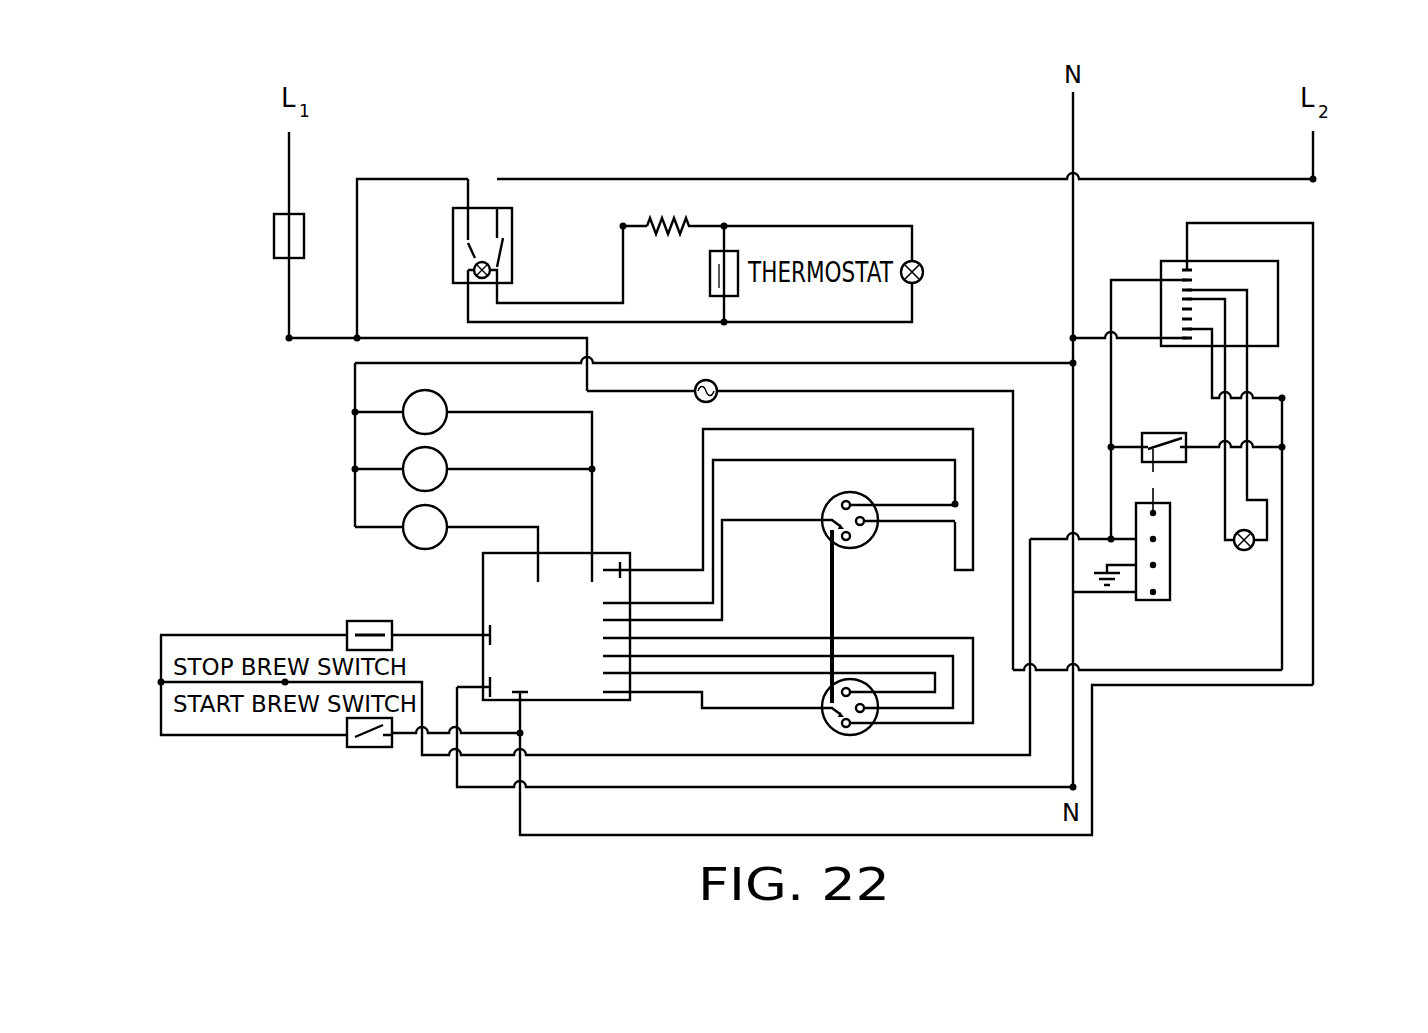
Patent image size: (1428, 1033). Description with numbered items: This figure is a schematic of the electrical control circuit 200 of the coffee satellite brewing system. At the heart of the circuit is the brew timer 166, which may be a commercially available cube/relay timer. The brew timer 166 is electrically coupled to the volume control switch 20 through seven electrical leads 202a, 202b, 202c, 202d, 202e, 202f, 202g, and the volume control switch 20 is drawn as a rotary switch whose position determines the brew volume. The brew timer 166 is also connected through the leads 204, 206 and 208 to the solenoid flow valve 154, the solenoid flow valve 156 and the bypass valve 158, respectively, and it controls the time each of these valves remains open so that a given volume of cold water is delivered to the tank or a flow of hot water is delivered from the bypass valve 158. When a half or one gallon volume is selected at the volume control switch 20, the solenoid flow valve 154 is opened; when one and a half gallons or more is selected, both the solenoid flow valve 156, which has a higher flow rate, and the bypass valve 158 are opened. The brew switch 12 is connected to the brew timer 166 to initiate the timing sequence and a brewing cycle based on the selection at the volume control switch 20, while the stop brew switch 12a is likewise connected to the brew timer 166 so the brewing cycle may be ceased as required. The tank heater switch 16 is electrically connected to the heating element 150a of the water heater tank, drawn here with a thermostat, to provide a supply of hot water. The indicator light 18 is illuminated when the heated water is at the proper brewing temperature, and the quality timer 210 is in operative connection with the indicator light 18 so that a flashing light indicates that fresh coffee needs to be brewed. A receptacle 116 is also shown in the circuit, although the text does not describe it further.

The brew switch 12 is at (360, 748).
The stop brew switch 12a is at (362, 620).
The tank heater switch 16 is at (483, 218).
The indicator light 18 is at (1253, 550).
The volume control switch 20 is at (842, 571).
The receptacle 116 is at (1170, 575).
The heating element 150a is at (670, 223).
The solenoid flow valve 154 is at (413, 550).
The solenoid flow valve 156 is at (441, 450).
The solenoid bypass valve 158 is at (441, 393).
The brew timer 166 is at (540, 695).
The electrical control circuit 200 is at (868, 148).
The electrical lead 202a is at (647, 568).
The electrical lead 202b is at (653, 600).
The electrical lead 202c is at (715, 627).
The electrical lead 202d is at (790, 613).
The electrical lead 202e is at (702, 660).
The electrical lead 202f is at (870, 670).
The electrical lead 202g is at (713, 713).
The lead 204 is at (465, 525).
The lead 206 is at (552, 469).
The lead 208 is at (552, 412).
The quality timer 210 is at (1263, 305).